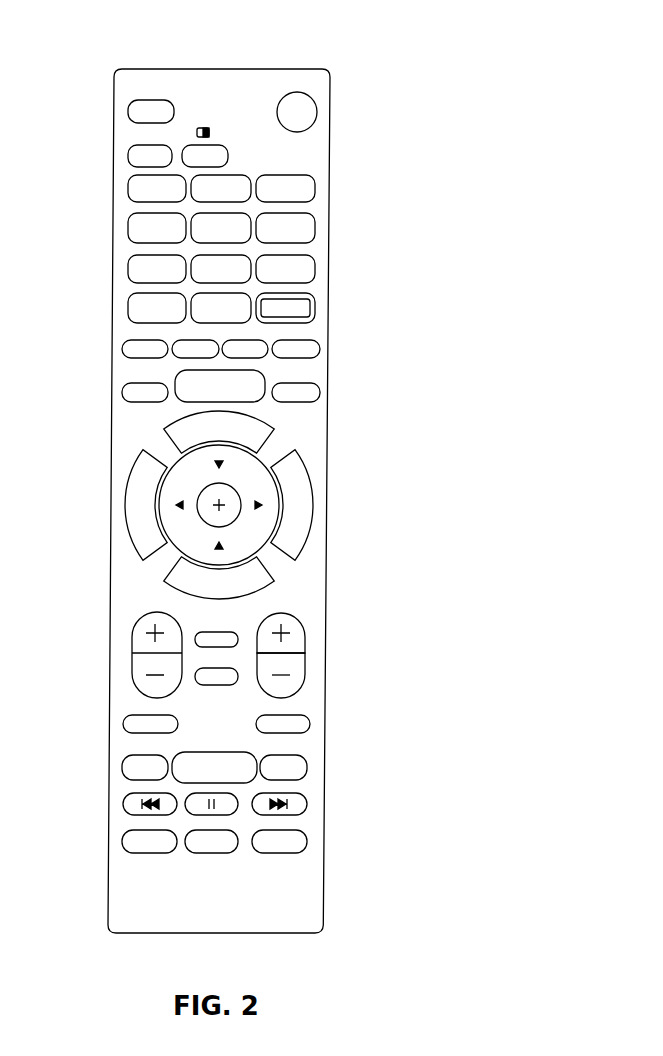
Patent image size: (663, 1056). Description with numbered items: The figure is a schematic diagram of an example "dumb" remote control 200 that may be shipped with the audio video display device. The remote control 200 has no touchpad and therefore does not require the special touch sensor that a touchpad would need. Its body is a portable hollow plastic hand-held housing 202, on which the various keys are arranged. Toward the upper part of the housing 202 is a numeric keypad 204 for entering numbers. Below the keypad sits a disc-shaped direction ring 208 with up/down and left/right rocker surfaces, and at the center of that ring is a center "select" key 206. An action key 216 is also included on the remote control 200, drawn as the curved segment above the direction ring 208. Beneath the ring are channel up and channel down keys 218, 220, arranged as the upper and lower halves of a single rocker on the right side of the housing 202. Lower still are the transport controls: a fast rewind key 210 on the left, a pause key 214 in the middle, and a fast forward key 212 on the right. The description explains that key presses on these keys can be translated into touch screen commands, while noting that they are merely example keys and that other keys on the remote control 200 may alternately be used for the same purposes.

The remote control 200 is at (285, 493).
The hand-held housing 202 is at (114, 90).
The numeric keypad 204 is at (130, 220).
The center "select" key 206 is at (228, 497).
The direction ring 208 is at (252, 537).
The fast rewind key 210 is at (130, 806).
The fast forward key 212 is at (298, 803).
The pause key 214 is at (230, 815).
The action key 216 is at (243, 432).
The channel up key 218 is at (296, 633).
The channel down key 220 is at (296, 673).